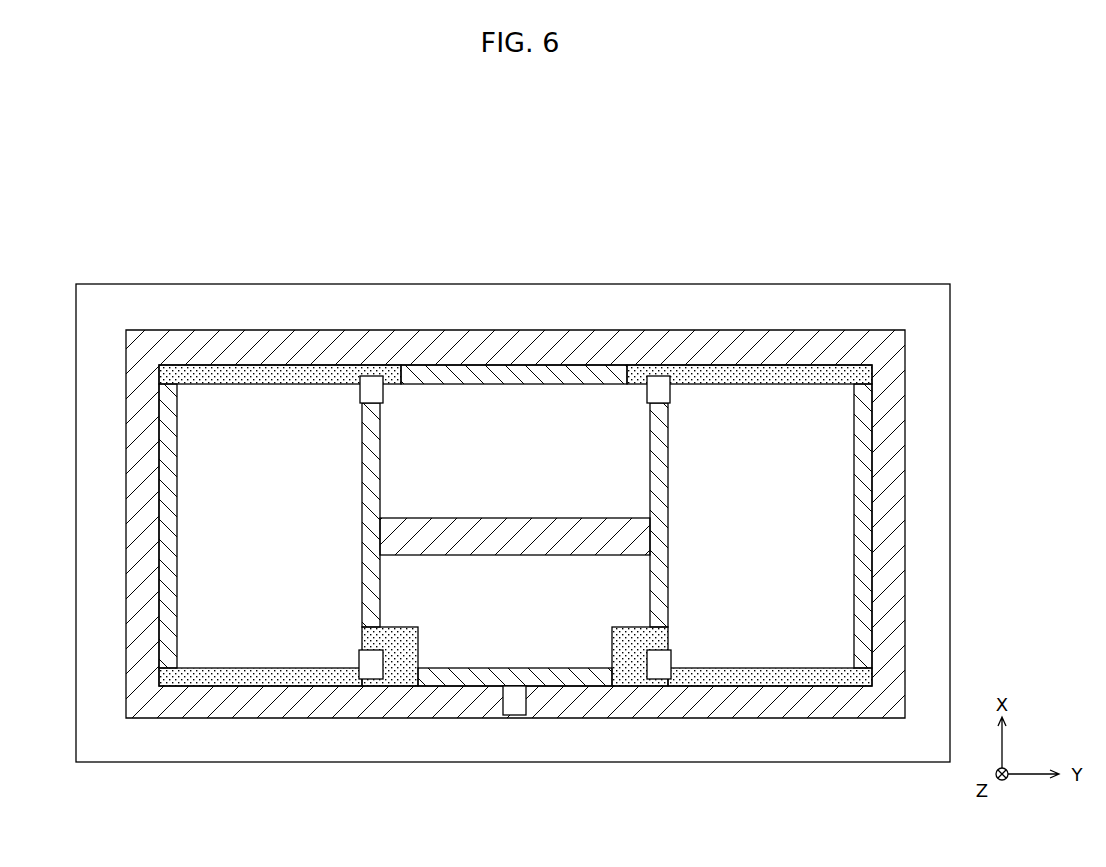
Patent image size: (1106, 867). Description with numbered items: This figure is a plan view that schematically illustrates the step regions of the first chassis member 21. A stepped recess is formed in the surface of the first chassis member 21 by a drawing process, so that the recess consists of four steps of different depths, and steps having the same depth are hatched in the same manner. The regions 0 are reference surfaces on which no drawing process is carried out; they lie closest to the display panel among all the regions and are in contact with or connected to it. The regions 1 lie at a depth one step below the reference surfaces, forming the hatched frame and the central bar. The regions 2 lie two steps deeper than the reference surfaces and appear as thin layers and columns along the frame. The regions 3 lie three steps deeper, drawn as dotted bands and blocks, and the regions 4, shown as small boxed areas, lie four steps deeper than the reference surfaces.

The first chassis member 21 is at (967, 240).
The reference surface regions 0 is at (513, 523).
The one-step-deep regions 1 is at (515, 524).
The two-step-deep regions 2 is at (515, 525).
The three-step-deep regions 3 is at (515, 525).
The four-step-deep regions 4 is at (515, 545).